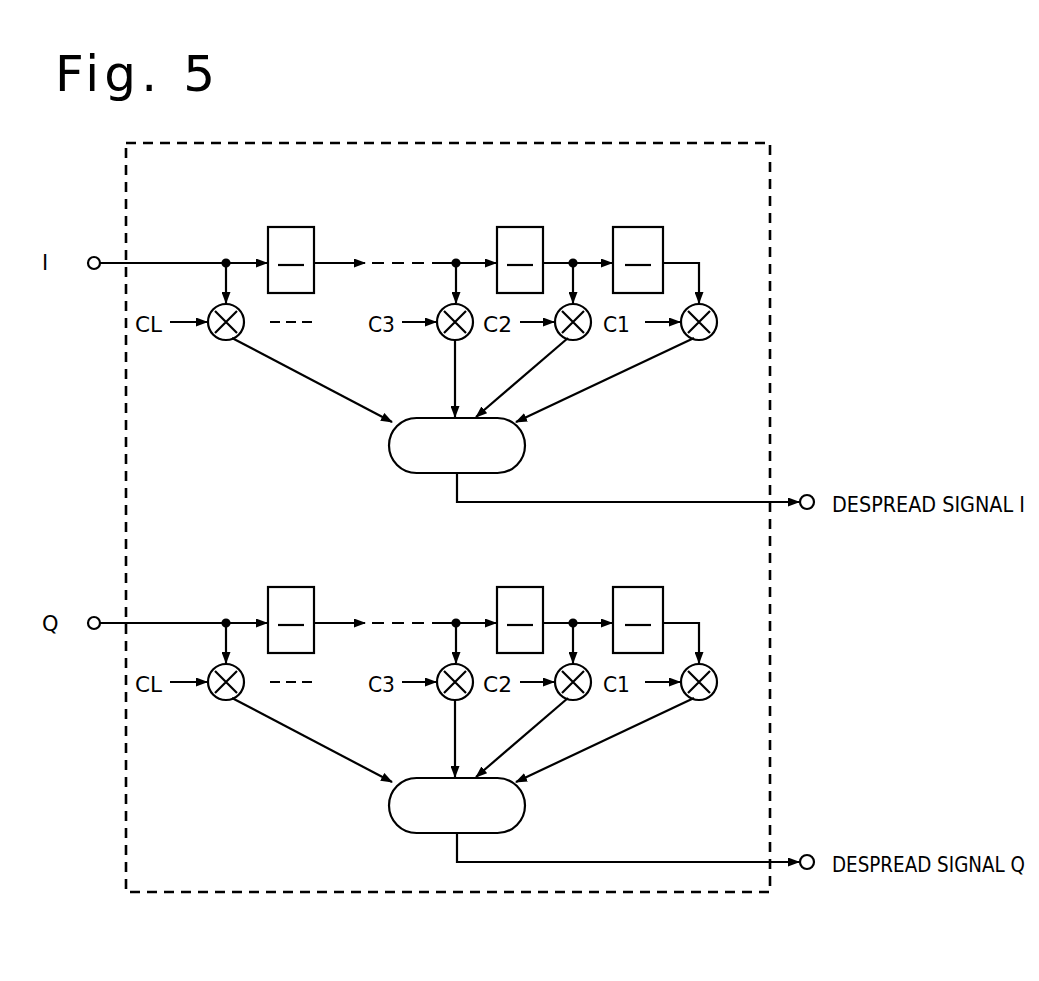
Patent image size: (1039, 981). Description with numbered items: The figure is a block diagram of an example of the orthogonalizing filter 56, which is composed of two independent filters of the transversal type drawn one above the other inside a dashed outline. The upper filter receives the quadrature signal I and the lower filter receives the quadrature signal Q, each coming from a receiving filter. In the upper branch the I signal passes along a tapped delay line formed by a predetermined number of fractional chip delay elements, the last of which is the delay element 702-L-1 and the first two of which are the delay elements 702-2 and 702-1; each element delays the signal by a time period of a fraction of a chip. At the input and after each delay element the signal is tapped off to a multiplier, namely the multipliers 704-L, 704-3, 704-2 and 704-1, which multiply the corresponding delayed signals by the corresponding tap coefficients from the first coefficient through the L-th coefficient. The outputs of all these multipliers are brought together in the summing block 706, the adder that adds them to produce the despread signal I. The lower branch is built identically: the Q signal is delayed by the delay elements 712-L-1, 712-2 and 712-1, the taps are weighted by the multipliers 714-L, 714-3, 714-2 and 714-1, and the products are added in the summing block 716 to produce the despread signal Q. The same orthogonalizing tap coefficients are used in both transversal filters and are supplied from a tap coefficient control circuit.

The orthogonalizing filter 56 is at (243, 143).
The fractional chip delay element 702-L-1 is at (313, 206).
The fractional chip delay element 702-2 is at (543, 206).
The fractional chip delay element 702-1 is at (635, 226).
The multiplier 704-L is at (207, 338).
The multiplier 704-3 is at (440, 337).
The multiplier 704-2 is at (590, 337).
The multiplier 704-1 is at (707, 337).
The adder (I branch) 706 is at (390, 460).
The fractional chip delay element 712-L-1 is at (315, 596).
The fractional chip delay element 712-2 is at (529, 596).
The fractional chip delay element 712-1 is at (653, 596).
The multiplier 714-L is at (203, 713).
The multiplier 714-3 is at (422, 707).
The multiplier 714-2 is at (610, 727).
The multiplier 714-1 is at (714, 711).
The adder (Q branch) 716 is at (421, 820).